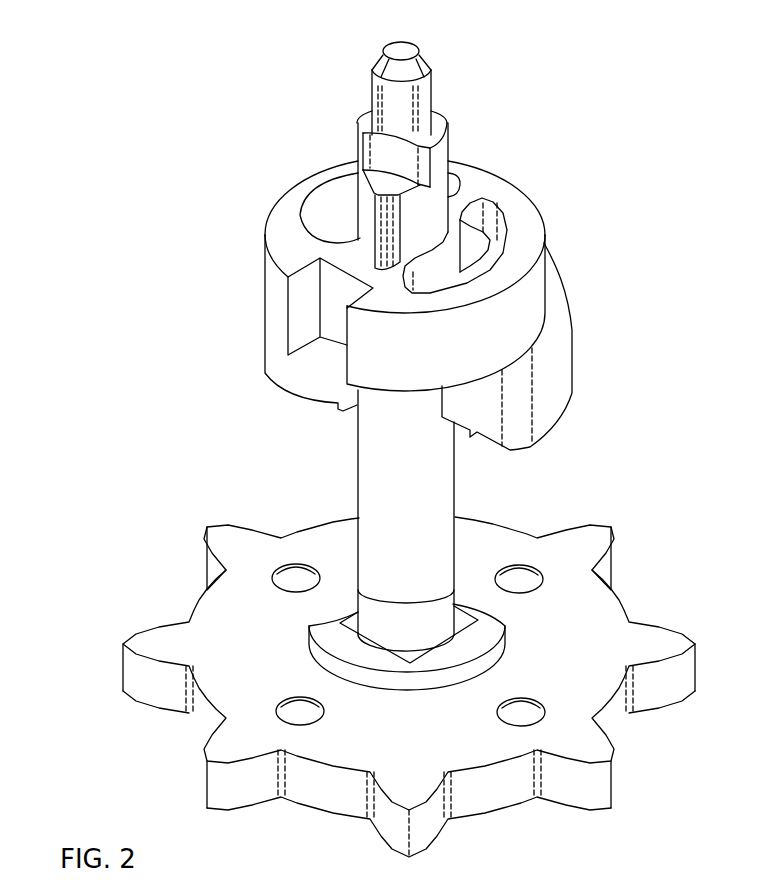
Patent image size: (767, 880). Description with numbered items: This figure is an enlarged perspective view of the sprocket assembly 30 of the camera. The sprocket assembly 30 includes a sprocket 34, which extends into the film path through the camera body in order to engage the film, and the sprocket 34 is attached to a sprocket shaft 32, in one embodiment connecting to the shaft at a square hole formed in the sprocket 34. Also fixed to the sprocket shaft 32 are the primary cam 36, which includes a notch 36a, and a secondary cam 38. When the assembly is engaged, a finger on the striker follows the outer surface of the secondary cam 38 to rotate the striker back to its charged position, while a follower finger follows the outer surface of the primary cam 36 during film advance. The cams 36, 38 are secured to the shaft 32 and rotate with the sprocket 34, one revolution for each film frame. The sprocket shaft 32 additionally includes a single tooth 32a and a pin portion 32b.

The sprocket assembly 30 is at (101, 281).
The sprocket shaft 32 is at (449, 130).
The single tooth 32a is at (372, 219).
The pin portion 32b is at (410, 46).
The sprocket 34 is at (615, 600).
The primary cam 36 is at (527, 198).
The notch 36a is at (298, 300).
The secondary cam 38 is at (575, 300).